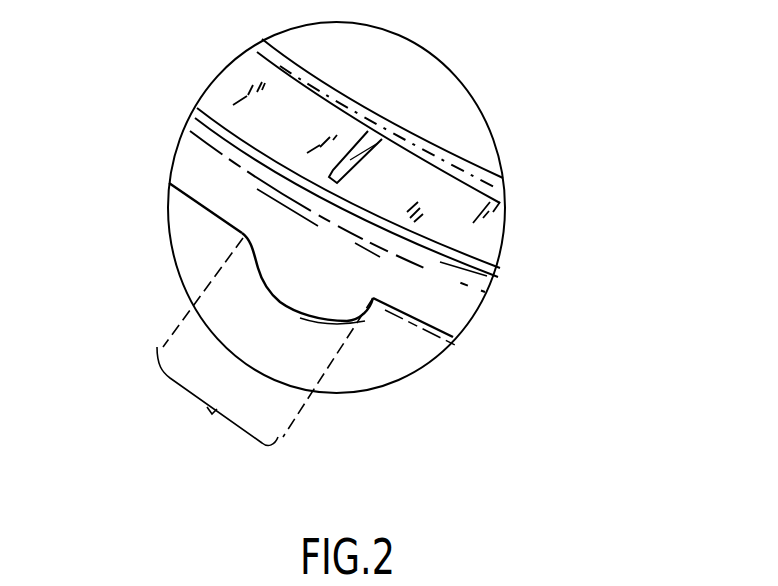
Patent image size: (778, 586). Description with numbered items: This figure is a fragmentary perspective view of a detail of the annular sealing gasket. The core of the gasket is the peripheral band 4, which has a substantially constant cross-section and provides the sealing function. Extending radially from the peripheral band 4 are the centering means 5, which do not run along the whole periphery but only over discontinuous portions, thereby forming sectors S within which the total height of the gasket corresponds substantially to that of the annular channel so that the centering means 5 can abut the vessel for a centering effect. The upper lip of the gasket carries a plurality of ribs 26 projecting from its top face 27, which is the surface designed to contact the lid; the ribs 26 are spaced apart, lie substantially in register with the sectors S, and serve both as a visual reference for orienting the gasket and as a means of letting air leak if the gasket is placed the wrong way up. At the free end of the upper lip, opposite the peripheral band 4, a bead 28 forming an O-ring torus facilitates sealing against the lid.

The peripheral band 4 is at (213, 182).
The centering means 5 is at (276, 303).
The ribs 26 is at (353, 160).
The top face 27 is at (452, 222).
The bead 28 is at (463, 168).
The sectors S is at (265, 341).